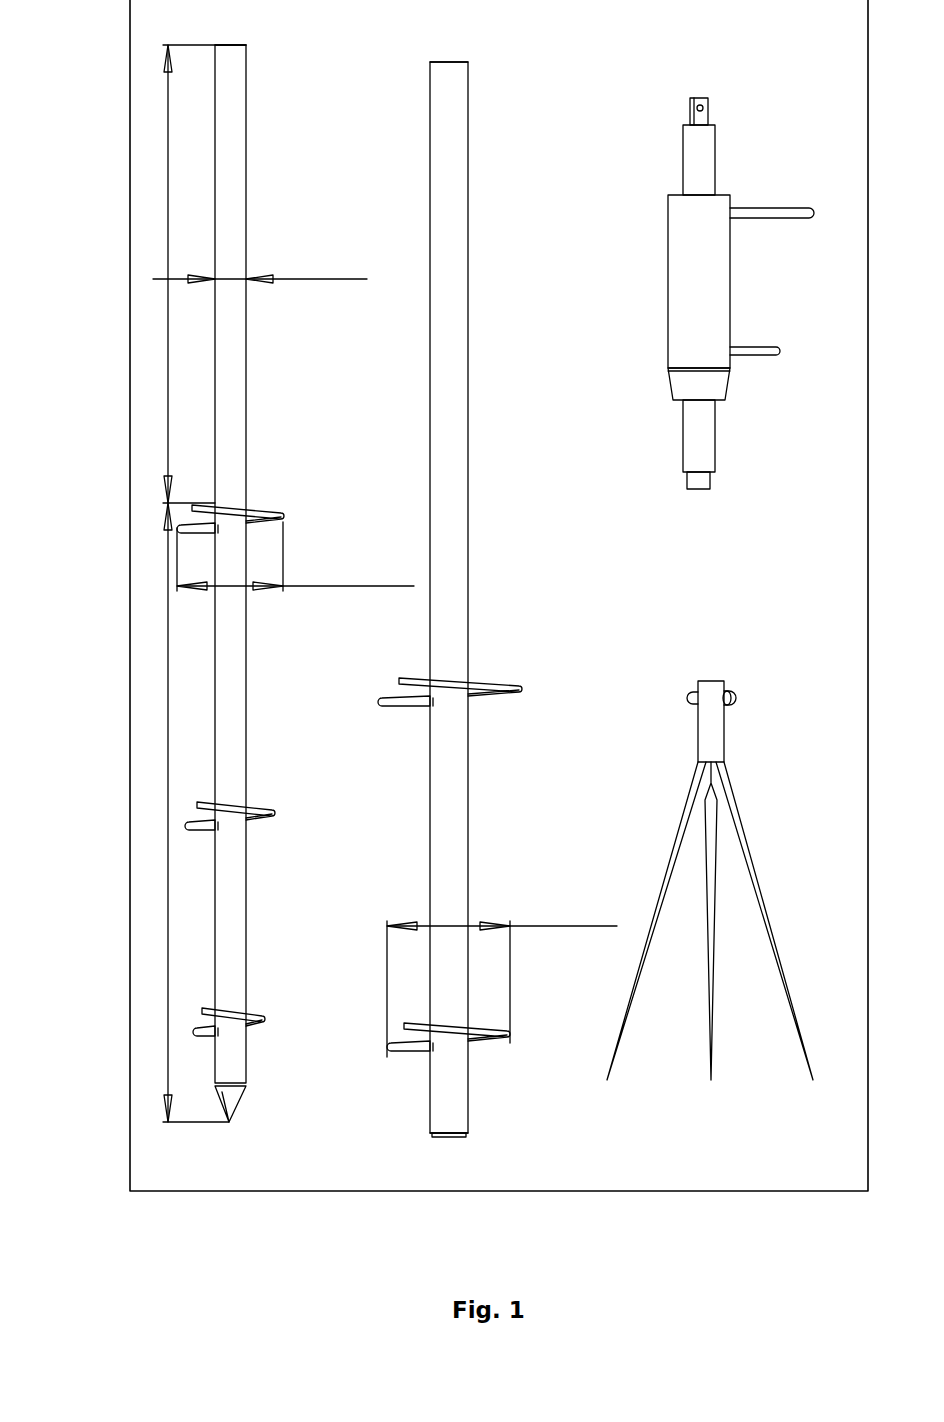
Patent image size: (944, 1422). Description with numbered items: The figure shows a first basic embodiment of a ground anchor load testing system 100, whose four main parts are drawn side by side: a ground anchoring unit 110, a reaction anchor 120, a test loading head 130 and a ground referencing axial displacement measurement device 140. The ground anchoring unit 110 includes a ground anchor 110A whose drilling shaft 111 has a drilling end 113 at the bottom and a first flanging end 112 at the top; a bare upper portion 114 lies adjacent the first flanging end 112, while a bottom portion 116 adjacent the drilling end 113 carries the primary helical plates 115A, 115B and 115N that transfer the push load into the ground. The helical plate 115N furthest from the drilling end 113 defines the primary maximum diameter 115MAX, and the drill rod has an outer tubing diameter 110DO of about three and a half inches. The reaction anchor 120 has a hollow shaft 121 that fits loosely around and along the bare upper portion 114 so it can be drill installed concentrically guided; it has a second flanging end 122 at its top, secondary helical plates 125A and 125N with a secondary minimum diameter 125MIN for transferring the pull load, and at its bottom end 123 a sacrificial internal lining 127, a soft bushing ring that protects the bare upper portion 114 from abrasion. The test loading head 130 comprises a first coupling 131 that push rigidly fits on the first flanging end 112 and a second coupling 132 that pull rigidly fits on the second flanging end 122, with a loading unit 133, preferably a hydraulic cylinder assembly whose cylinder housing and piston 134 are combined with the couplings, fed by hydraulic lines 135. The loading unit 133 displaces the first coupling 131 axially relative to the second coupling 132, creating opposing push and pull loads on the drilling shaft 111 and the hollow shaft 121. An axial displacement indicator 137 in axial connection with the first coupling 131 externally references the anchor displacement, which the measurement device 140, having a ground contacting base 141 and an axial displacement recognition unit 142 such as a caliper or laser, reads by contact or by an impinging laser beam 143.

The ground anchor load testing system 100 is at (192, 1188).
The ground anchoring unit 110 is at (281, 572).
The ground anchor 110A is at (281, 572).
The drilling shaft 111 is at (246, 185).
The first flanging end 112 is at (230, 45).
The drilling end 113 is at (230, 1105).
The bare upper portion 114 is at (193, 274).
The helical plate 115N is at (264, 515).
The helical plate 115B is at (265, 810).
The helical plate 115A is at (258, 1015).
The primary maximum diameter 115MAX is at (295, 556).
The bottom portion 116 is at (185, 812).
The outer tubing diameter 110DO is at (260, 267).
The reaction anchor 120 is at (486, 599).
The hollow shaft 121 is at (468, 182).
The second flanging end 122 is at (452, 62).
The bottom end 123 is at (430, 1130).
The secondary helical plate 125N is at (502, 688).
The secondary helical plate 125A is at (493, 1040).
The secondary minimum diameter 125MIN is at (502, 978).
The sacrificial internal lining 127 is at (455, 1137).
The test loading head 130 is at (698, 279).
The first coupling 131 is at (698, 480).
The second coupling 132 is at (673, 400).
The loading unit 133 is at (672, 288).
The cylinder housing and piston 134 is at (693, 162).
The hydraulic lines 135 is at (763, 213).
The axial displacement indicator 137 is at (701, 98).
The ground referencing axial displacement measurement device 140 is at (716, 869).
The ground contacting base 141 is at (712, 1035).
The axial displacement recognition unit 142 is at (705, 730).
The laser beam 143 is at (692, 693).